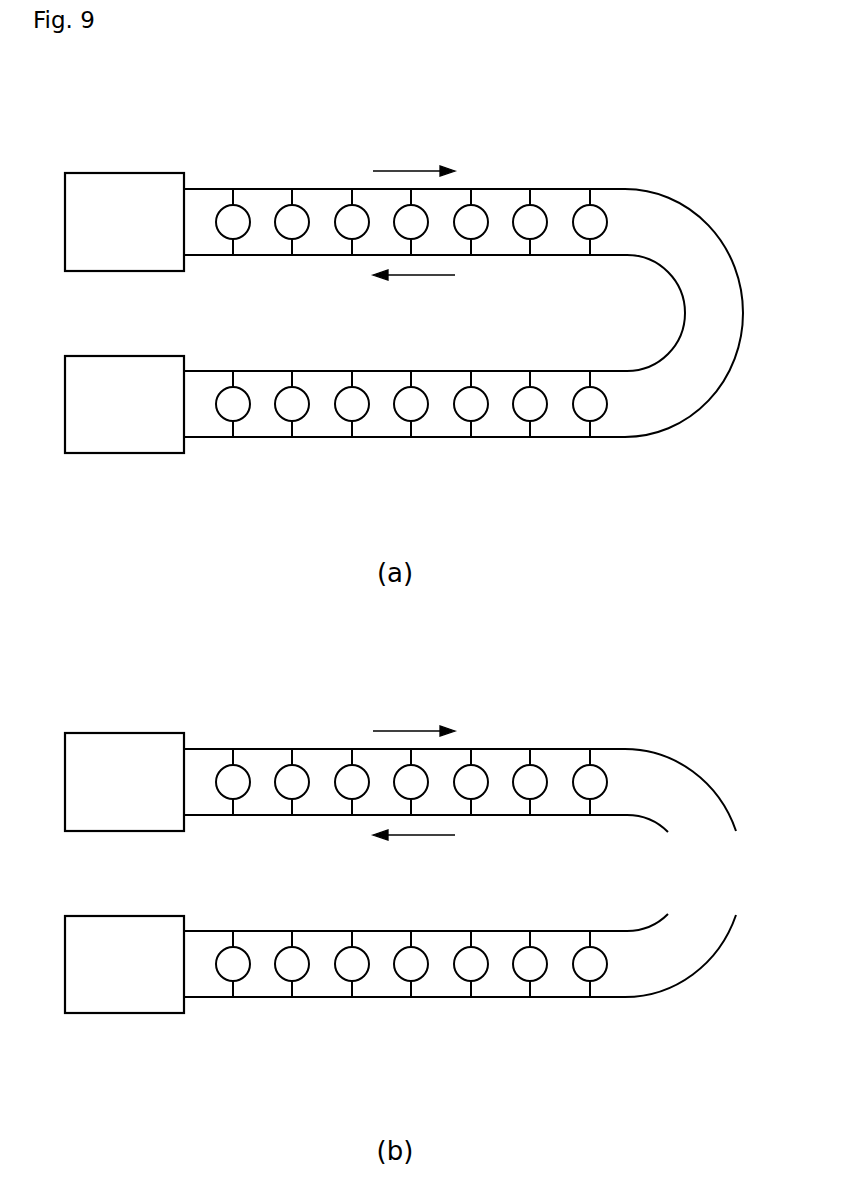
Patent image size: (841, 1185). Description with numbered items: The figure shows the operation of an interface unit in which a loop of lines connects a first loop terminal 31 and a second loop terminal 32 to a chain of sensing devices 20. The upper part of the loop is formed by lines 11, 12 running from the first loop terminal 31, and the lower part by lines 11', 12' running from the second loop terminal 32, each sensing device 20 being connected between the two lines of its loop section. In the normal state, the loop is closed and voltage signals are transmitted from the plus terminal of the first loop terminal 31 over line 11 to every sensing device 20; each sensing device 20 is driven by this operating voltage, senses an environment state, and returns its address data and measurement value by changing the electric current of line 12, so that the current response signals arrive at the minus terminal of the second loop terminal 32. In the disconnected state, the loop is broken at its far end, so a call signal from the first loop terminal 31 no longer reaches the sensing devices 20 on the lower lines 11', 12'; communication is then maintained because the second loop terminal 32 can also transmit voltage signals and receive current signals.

The loop 1-A terminal 31 is at (128, 172).
The loop 1-B terminal 32 is at (125, 455).
The sensing device 20 is at (235, 215).
The line 11 is at (463, 558).
The line 12 is at (434, 593).
The line 12' is at (405, 612).
The line 11' is at (404, 762).